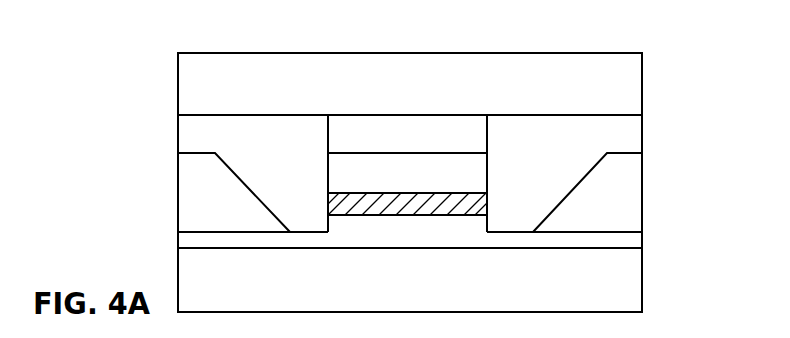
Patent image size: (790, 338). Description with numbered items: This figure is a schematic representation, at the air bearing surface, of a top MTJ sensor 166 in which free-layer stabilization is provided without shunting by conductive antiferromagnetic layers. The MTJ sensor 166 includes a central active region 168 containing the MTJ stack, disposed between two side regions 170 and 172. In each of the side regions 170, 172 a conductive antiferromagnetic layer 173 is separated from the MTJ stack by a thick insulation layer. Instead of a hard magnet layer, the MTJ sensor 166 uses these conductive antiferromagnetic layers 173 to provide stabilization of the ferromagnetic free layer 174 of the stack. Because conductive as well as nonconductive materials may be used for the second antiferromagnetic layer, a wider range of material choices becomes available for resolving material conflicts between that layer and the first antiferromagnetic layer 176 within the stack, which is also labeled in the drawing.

The top MTJ sensor 166 is at (143, 67).
The active region 168 is at (333, 43).
The side region 170 is at (333, 43).
The side region 172 is at (487, 43).
The conductive AFM layer 173 is at (185, 174).
The FM free layer 174 is at (635, 244).
The first AFM layer 176 is at (488, 134).